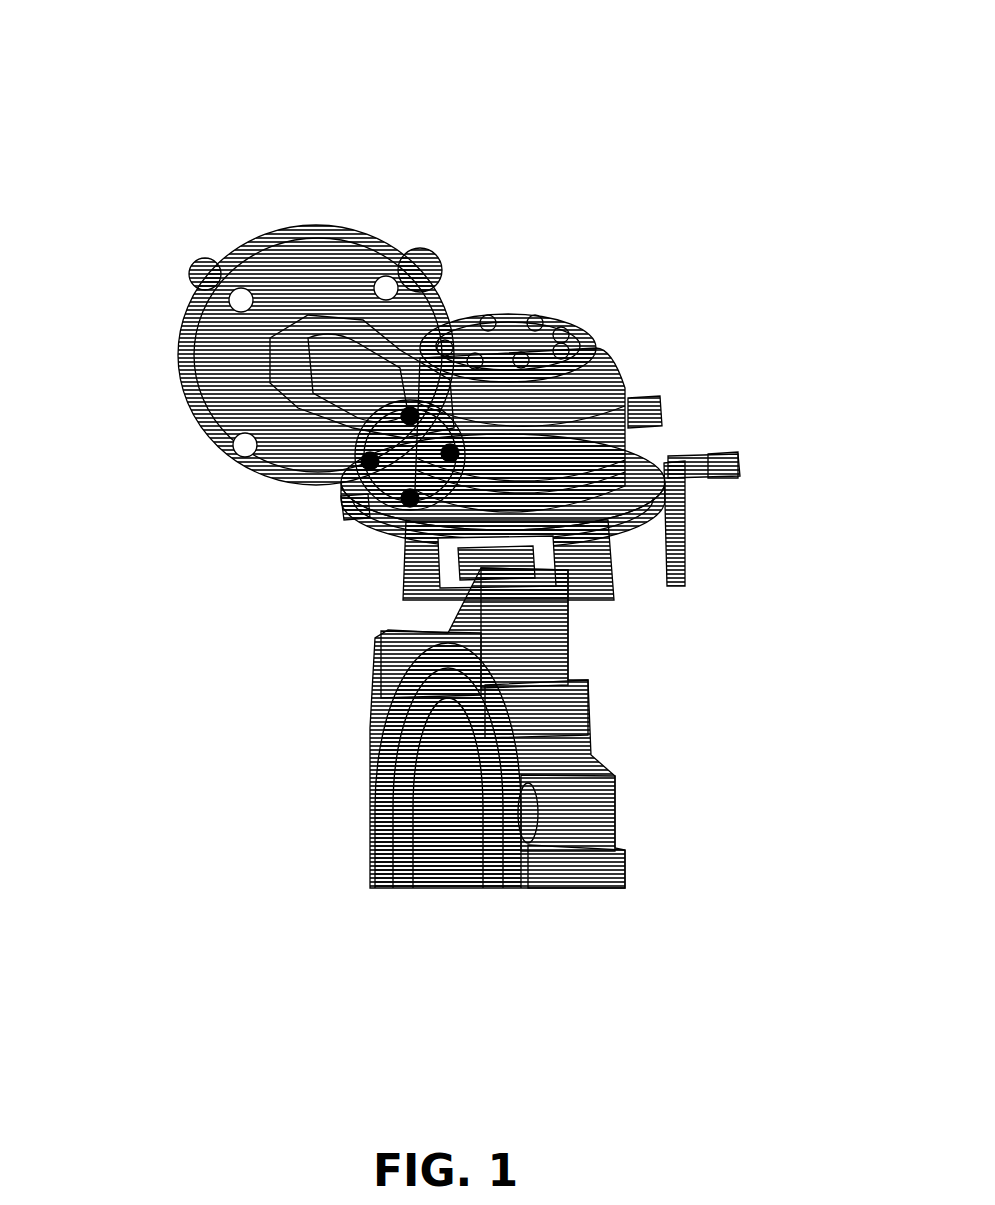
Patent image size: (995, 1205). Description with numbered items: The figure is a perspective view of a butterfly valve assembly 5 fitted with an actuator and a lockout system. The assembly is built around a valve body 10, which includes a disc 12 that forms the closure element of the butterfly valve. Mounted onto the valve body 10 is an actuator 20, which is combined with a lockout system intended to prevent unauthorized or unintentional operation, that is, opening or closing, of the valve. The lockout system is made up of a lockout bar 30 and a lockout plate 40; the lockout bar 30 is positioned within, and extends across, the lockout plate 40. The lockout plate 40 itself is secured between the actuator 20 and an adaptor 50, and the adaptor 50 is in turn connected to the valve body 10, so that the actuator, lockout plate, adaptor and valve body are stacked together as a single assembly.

The valve assembly 5 is at (471, 518).
The valve body 10 is at (523, 779).
The disc 12 is at (453, 820).
The actuator 20 is at (293, 282).
The lockout bar 30 is at (693, 457).
The lockout plate 40 is at (393, 512).
The adaptor 50 is at (602, 573).